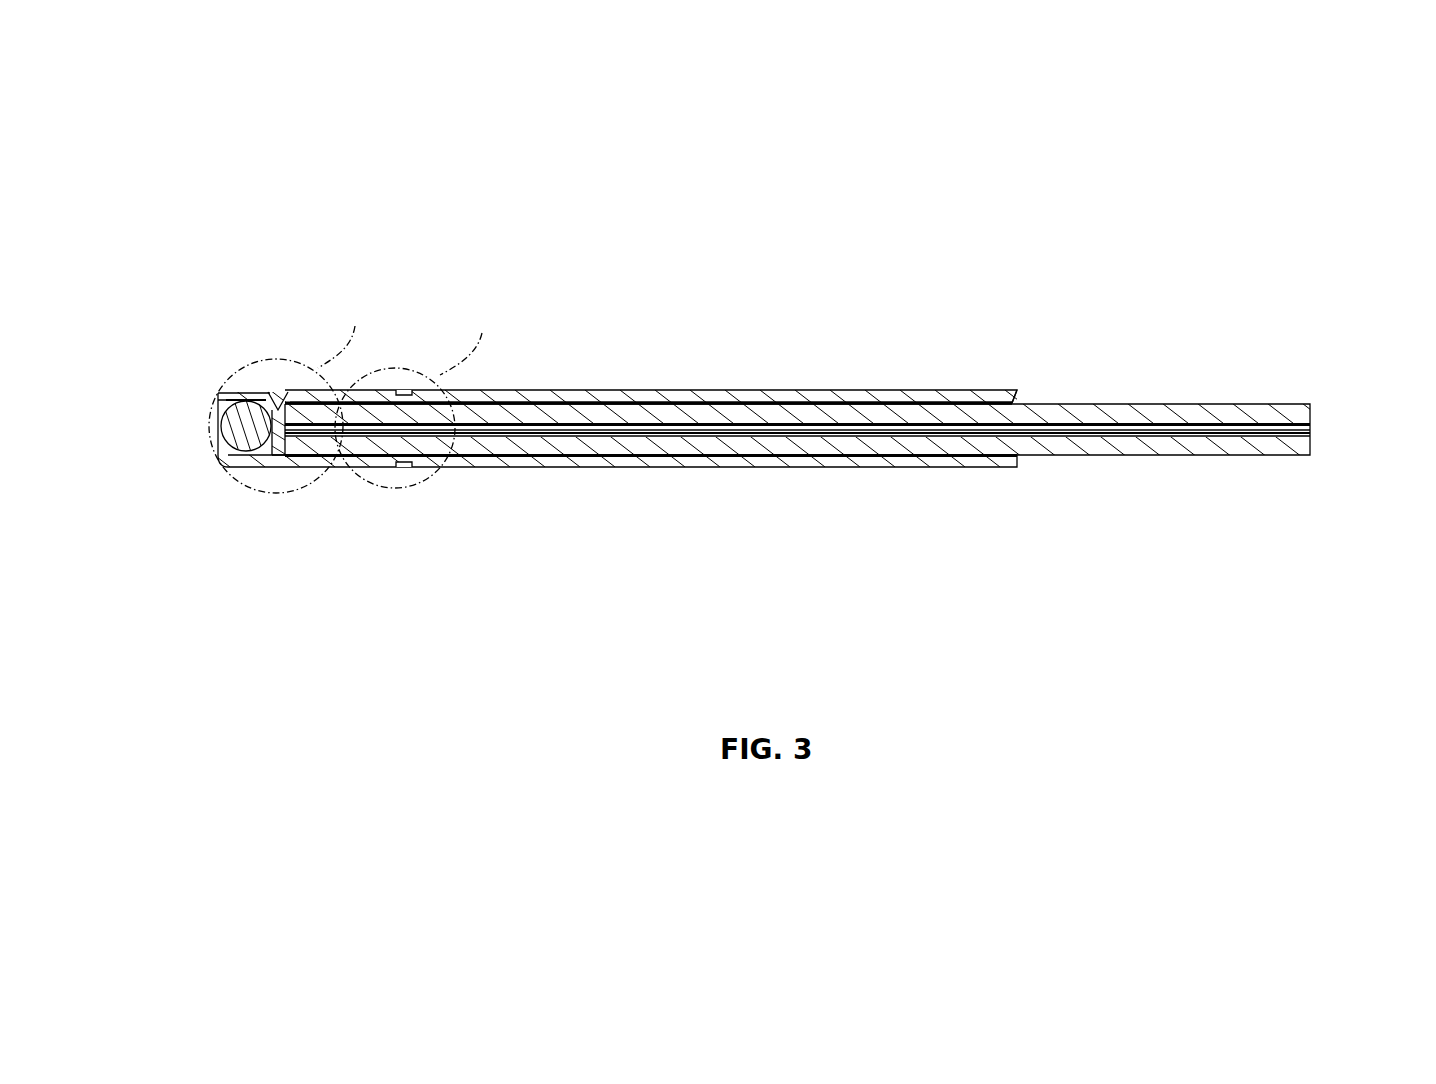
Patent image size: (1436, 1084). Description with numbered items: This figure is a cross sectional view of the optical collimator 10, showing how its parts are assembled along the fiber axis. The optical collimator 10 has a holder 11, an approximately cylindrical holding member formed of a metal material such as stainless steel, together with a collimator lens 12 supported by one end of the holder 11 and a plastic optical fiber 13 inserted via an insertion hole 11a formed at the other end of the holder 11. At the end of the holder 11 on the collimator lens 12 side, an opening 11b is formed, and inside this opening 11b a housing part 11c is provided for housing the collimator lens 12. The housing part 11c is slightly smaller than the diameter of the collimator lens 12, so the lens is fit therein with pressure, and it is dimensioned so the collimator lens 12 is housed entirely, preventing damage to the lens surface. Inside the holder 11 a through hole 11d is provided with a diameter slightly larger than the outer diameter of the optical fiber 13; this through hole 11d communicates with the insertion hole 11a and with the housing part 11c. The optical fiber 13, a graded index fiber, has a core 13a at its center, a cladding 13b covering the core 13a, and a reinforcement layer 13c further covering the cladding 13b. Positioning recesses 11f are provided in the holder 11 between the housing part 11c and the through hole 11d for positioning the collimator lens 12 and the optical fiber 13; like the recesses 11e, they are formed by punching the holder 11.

The optical collimator 10 is at (379, 131).
The holder 11 is at (778, 391).
The insertion hole 11a is at (1018, 396).
The opening 11b is at (214, 401).
The housing part 11c is at (217, 455).
The through hole 11d is at (622, 402).
The recesses 11e is at (404, 392).
The positioning recesses 11f is at (277, 397).
The collimator lens 12 is at (245, 444).
The plastic optical fiber 13 is at (1378, 366).
The core 13a is at (1312, 438).
The cladding 13b is at (1312, 424).
The reinforcement layer 13c is at (1312, 408).